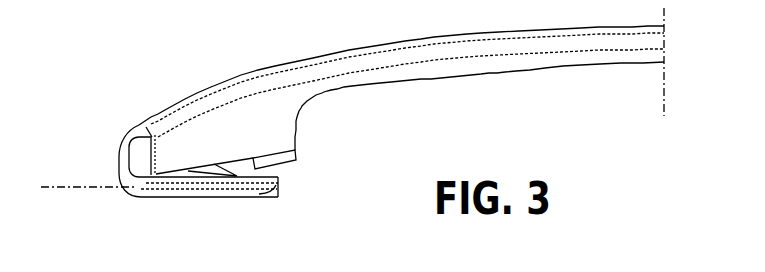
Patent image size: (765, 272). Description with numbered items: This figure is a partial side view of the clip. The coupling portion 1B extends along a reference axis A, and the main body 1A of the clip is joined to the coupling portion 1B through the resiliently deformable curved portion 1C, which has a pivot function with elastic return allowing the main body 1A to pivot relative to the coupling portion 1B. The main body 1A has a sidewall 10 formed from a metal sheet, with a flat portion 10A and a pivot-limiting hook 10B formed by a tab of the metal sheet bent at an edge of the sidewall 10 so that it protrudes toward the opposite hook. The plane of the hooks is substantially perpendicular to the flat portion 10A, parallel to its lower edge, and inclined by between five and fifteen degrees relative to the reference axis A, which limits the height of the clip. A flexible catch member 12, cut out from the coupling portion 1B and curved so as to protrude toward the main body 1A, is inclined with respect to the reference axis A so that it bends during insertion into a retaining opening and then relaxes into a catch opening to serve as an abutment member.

The main body 1A is at (519, 82).
The coupling portion 1B is at (291, 193).
The resiliently deformable curved portion 1C is at (125, 152).
The sidewall 10 is at (245, 106).
The flat portion 10A is at (205, 150).
The pivot-limiting hook 10B is at (294, 155).
The flexible catch member 12 is at (212, 175).
The reference axis A is at (53, 188).